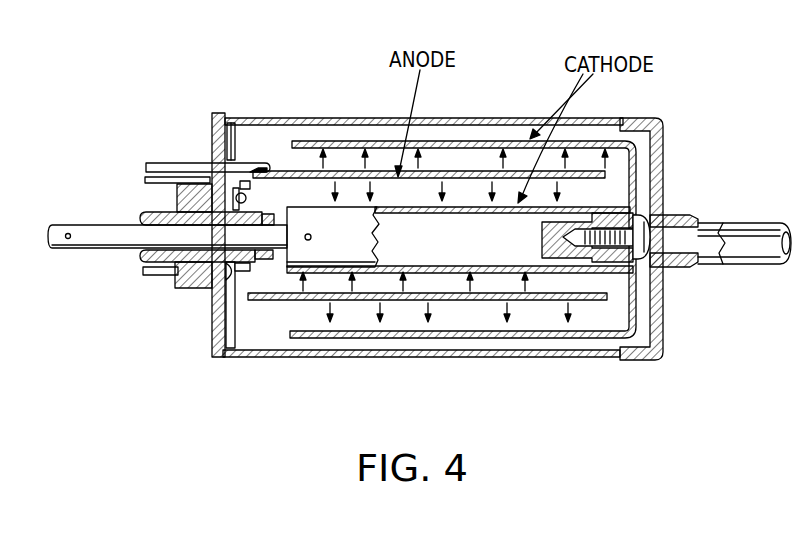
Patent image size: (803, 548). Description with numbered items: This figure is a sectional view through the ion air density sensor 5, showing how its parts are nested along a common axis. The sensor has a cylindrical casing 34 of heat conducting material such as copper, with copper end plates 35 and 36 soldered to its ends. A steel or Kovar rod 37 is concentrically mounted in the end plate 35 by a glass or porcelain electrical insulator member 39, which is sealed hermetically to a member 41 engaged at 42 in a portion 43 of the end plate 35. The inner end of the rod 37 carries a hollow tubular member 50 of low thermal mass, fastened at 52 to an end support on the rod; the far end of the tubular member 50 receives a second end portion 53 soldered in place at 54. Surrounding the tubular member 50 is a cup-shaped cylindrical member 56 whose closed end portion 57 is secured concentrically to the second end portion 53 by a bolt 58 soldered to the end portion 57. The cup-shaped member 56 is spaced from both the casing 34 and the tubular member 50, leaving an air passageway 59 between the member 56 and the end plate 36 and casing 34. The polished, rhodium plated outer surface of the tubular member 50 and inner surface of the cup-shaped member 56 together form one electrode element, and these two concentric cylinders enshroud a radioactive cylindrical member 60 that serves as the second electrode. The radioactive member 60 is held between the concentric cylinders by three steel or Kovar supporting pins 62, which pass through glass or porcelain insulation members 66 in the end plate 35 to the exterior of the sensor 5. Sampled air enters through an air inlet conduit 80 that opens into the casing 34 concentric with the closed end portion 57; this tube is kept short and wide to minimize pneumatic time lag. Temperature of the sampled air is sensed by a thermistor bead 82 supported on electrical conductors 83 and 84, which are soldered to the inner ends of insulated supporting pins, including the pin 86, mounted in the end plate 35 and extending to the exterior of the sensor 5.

The ion air density sensor 5 is at (669, 102).
The cylindrical casing 34 is at (317, 118).
The end plate 35 is at (213, 118).
The end plate 36 is at (659, 157).
The rod 37 is at (80, 225).
The electrical insulator member 39 is at (140, 257).
The member 41 is at (176, 203).
The engagement point 42 is at (193, 283).
The portion of the end plate 43 is at (208, 283).
The hollow tubular member 50 is at (453, 214).
The fastening point 52 is at (311, 237).
The second end portion 53 is at (621, 213).
The solder joint 54 is at (542, 271).
The cup-shaped cylindrical member 56 is at (508, 141).
The closed end portion 57 is at (637, 313).
The bolt 58 is at (652, 222).
The air passageway 59 is at (438, 127).
The radioactive cylindrical member 60 is at (447, 171).
The supporting pins 62 is at (171, 163).
The insulation members 66 is at (213, 166).
The air inlet conduit 80 is at (745, 228).
The thermistor bead 82 is at (250, 198).
The electrical conductor 83 is at (247, 201).
The electrical conductor 84 is at (245, 190).
The supporting pin 86 is at (148, 181).